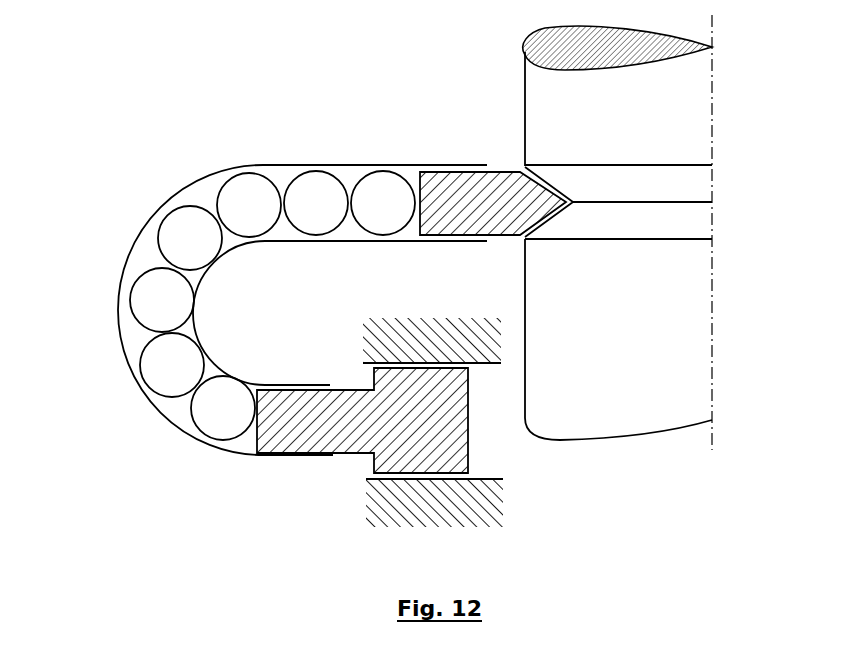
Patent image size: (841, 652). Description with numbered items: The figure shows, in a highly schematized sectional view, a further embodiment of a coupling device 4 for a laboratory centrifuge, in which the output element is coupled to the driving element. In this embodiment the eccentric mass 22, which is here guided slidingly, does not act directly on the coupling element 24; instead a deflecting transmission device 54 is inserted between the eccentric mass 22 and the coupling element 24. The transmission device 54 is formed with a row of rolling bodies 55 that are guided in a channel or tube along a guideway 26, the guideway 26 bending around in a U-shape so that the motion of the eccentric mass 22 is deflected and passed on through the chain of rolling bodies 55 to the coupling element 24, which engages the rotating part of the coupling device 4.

The coupling device 4 is at (477, 92).
The eccentric mass 22 is at (355, 445).
The coupling element 24 is at (430, 172).
The guideway 26 is at (127, 332).
The deflecting transmission device 54 is at (124, 363).
The rolling bodies 55 is at (176, 308).